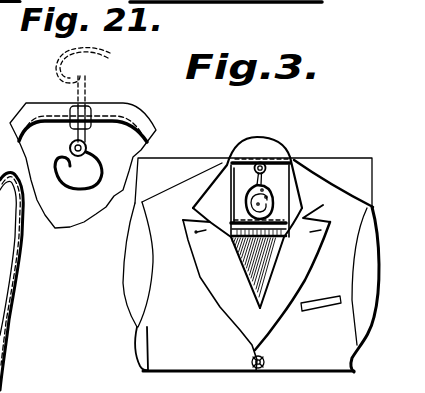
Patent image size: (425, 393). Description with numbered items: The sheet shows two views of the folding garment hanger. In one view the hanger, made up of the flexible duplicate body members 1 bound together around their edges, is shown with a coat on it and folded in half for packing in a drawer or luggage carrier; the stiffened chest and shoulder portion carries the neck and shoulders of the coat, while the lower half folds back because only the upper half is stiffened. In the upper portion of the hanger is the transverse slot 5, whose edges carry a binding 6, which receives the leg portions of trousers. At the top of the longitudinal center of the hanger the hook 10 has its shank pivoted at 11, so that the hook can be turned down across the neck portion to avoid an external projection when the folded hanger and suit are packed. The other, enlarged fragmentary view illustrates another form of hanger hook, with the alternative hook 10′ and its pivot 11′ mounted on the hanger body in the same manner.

In FIG. 21, the body member 1 is at (125, 140).
In FIG. 3, the body member 1 is at (258, 263).
In FIG. 3, the transverse slot 5 is at (283, 222).
In FIG. 3, the binding 6 is at (228, 212).
In FIG. 3, the hook 10 is at (270, 186).
In FIG. 21, the pivot 11 is at (62, 130).
In FIG. 3, the pivot 11 is at (262, 167).
In FIG. 21, the hook (modified form) 10′ is at (102, 55).
In FIG. 21, the hanger bar (modified form) 11′ is at (97, 116).